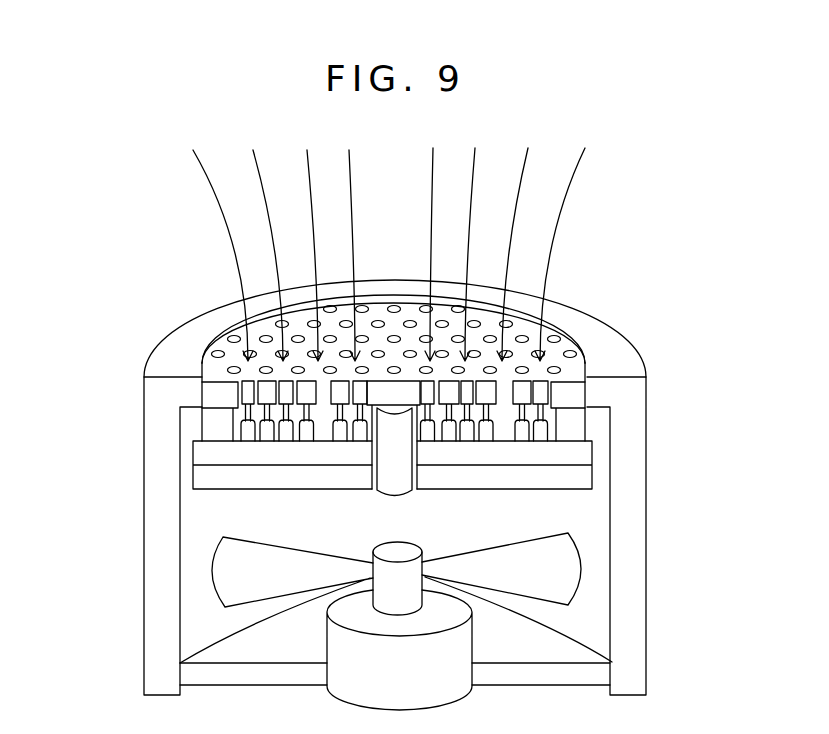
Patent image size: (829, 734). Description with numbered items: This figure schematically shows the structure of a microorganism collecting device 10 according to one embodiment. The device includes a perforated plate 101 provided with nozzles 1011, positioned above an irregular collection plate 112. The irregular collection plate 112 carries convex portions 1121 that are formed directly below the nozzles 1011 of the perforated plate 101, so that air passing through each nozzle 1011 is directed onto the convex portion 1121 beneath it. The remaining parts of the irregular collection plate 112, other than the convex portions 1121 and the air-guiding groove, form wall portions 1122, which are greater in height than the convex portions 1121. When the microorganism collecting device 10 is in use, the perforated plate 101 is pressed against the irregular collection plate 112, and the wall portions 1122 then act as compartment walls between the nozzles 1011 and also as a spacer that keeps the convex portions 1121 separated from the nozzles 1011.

The microorganism collecting device 10 is at (178, 250).
The perforated plate 101 is at (556, 372).
The nozzles 1011 is at (222, 350).
The irregular collection plate 112 is at (577, 478).
The convex portions 1121 is at (537, 437).
The wall portions 1122 is at (215, 427).